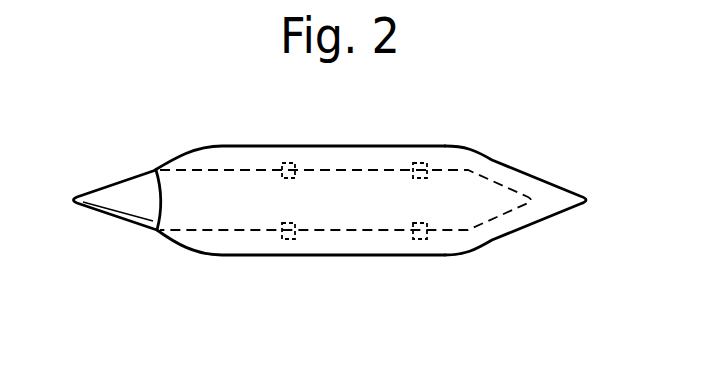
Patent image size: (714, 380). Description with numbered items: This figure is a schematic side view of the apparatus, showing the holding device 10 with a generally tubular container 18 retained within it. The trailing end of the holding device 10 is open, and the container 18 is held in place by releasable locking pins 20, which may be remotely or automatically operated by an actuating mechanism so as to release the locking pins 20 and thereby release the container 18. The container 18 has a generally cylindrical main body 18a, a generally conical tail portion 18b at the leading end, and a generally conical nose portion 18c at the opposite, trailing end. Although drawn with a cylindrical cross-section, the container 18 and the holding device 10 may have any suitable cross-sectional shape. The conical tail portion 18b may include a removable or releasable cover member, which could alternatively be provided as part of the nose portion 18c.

The holding device 10 is at (342, 213).
The container 18 is at (342, 218).
The main body 18a is at (259, 168).
The tail portion 18b is at (542, 186).
The nose portion 18c is at (118, 201).
The locking pins 20 is at (290, 244).